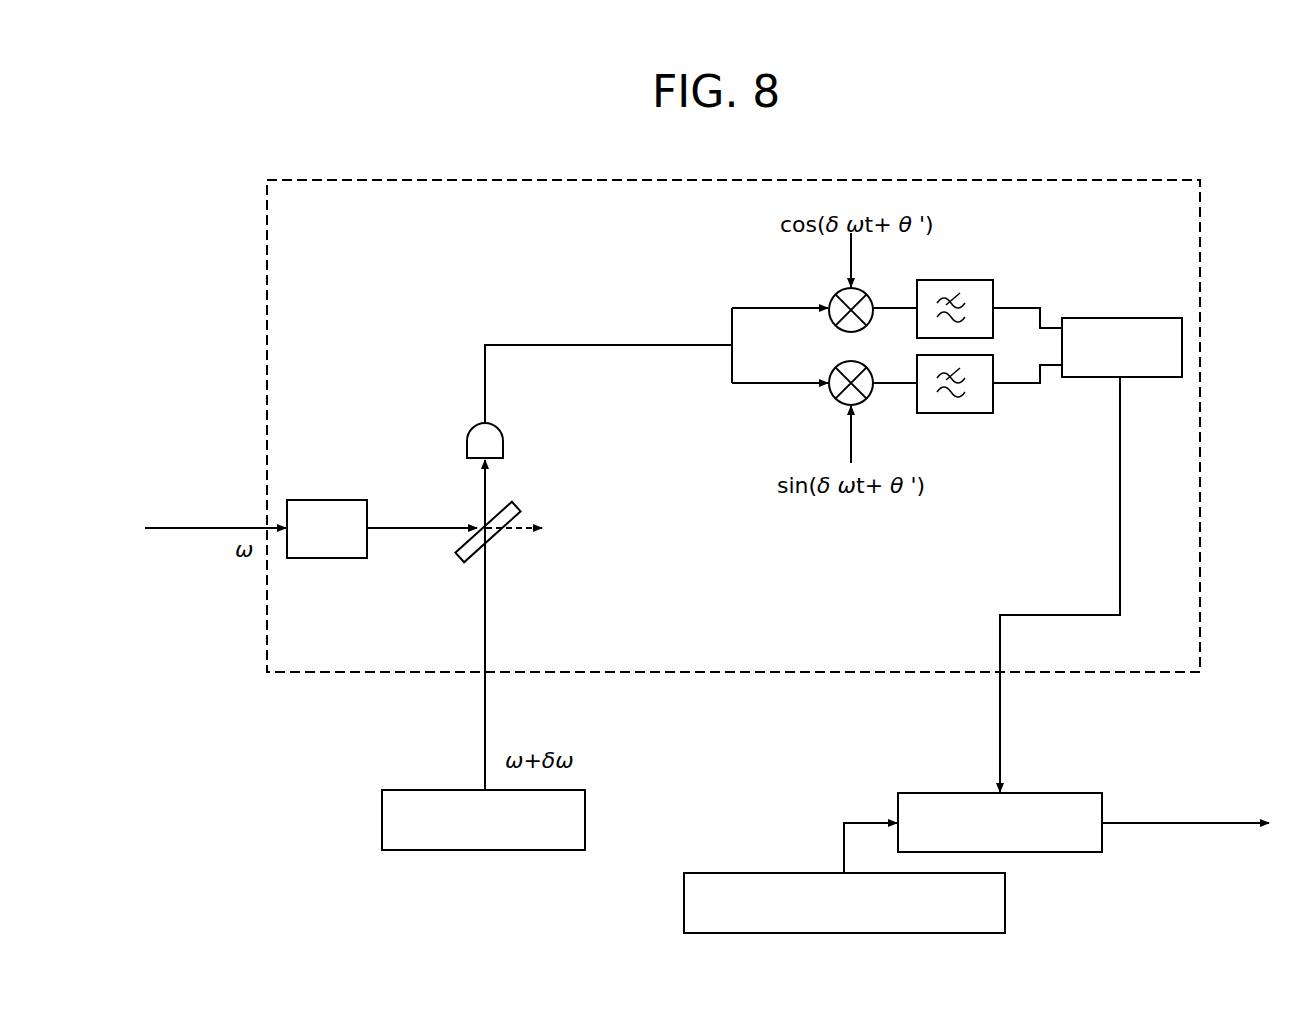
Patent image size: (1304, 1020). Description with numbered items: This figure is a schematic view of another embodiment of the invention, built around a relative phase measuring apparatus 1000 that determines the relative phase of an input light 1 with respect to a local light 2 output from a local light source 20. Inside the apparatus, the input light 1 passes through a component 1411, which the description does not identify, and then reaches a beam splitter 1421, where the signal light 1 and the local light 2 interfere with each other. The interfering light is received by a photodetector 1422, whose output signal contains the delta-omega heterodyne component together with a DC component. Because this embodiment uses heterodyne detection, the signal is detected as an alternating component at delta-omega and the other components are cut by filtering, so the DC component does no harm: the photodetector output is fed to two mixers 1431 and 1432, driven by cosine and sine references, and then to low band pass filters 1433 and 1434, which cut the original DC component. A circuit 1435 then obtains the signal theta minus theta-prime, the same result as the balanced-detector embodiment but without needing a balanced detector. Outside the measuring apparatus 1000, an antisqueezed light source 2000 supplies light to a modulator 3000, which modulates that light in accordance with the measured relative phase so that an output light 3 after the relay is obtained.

The relative phase measuring apparatus 1000 is at (815, 180).
The input light 1 is at (180, 532).
The optical modulator 1411 is at (320, 500).
The beam splitter 1421 is at (492, 548).
The photodetector 1422 is at (478, 425).
The local light 2 is at (483, 725).
The local light source 20 is at (382, 827).
The mixer 1431 is at (838, 292).
The mixer 1432 is at (834, 406).
The low band pass filter 1433 is at (990, 280).
The low band pass filter 1434 is at (982, 413).
The circuit 1435 is at (1122, 318).
The modulator 3000 is at (1057, 793).
The antisqueezed light source 2000 is at (684, 905).
The output light 3 is at (1207, 822).